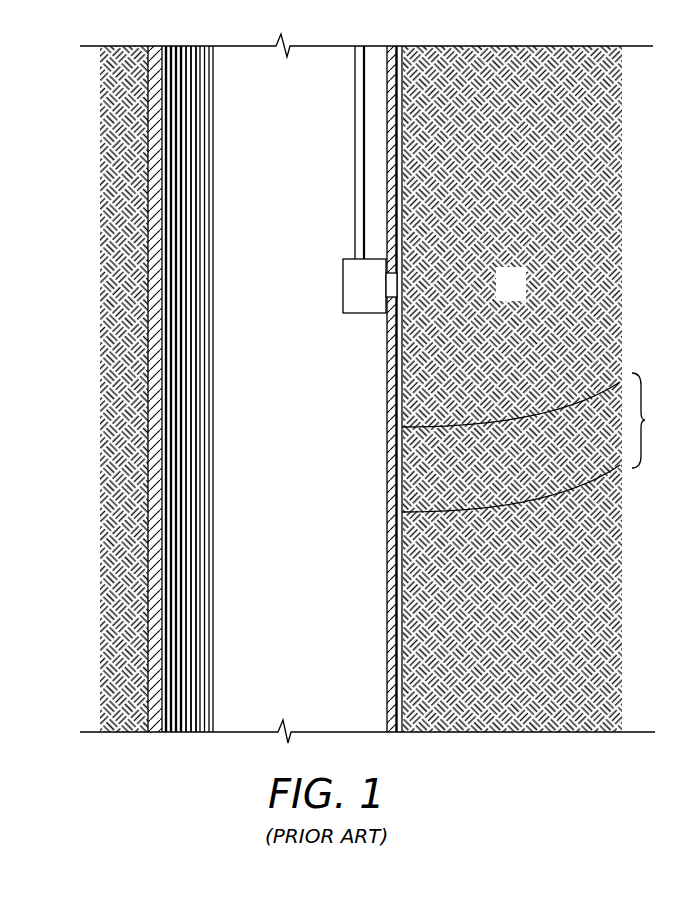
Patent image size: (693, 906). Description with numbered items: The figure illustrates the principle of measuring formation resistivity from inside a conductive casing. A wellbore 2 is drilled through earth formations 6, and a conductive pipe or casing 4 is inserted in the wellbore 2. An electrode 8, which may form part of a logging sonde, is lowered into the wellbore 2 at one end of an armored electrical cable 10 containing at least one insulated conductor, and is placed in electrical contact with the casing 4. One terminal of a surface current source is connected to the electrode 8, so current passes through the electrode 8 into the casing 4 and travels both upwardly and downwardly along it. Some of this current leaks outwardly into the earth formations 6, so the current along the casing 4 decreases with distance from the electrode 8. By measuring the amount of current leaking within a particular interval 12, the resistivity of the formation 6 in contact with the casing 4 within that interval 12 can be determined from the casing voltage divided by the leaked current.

The wellbore 2 is at (400, 625).
The casing 4 is at (387, 390).
The earth formations 6 is at (520, 295).
The electrode 8 is at (343, 282).
The armored electrical cable 10 is at (355, 143).
The interval 12 is at (539, 442).